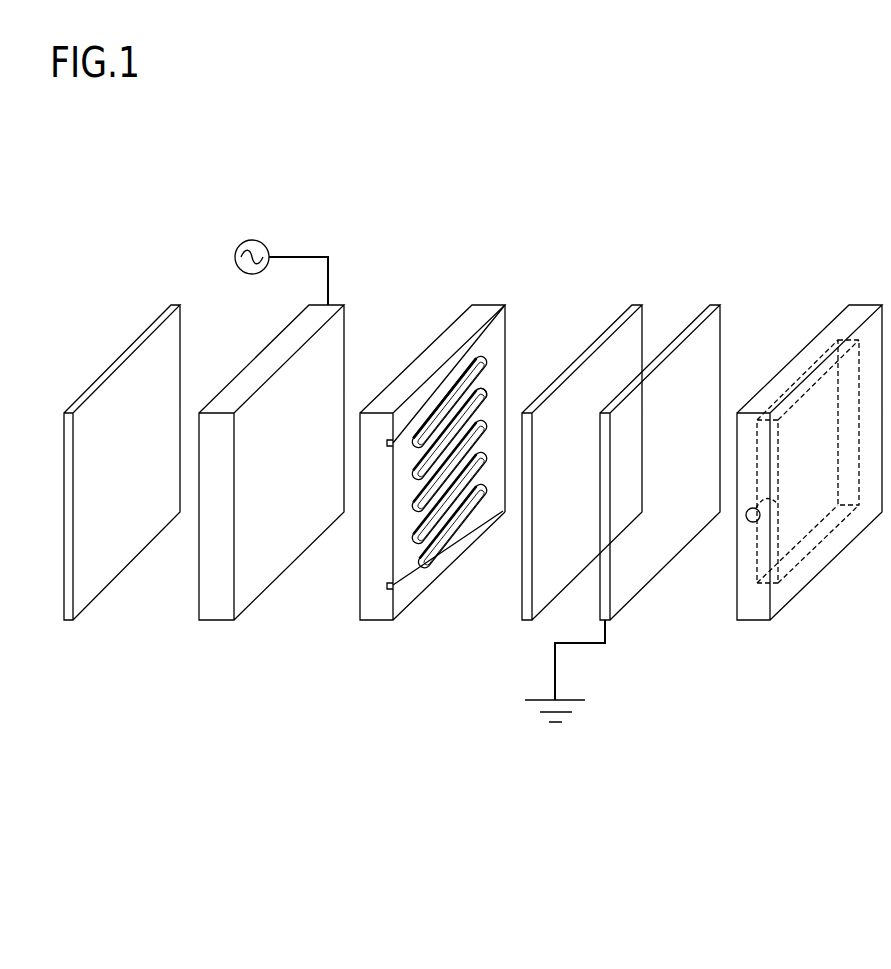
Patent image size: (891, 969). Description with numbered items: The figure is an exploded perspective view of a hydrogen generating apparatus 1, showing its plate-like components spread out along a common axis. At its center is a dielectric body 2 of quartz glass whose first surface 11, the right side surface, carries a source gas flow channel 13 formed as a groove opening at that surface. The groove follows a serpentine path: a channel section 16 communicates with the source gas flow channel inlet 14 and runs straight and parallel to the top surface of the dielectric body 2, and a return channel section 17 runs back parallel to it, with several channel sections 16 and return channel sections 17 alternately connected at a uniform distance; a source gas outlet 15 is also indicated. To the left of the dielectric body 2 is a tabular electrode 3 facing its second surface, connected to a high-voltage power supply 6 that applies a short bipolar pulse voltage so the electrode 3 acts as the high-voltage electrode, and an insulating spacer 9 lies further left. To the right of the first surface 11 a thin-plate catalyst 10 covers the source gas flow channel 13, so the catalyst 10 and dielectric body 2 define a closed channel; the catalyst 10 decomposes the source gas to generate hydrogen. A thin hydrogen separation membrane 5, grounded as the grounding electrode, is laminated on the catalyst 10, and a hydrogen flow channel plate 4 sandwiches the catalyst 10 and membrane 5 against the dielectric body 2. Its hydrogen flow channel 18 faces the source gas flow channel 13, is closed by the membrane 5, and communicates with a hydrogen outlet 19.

The hydrogen generating apparatus 1 is at (600, 185).
The dielectric body 2 is at (430, 353).
The electrode 3 is at (273, 353).
The hydrogen flow channel plate 4 is at (833, 323).
The hydrogen separation membrane 5 is at (694, 322).
The high-voltage power supply 6 is at (245, 242).
The insulating spacer 9 is at (125, 343).
The catalyst 10 is at (615, 322).
The first surface 11 is at (505, 333).
The source gas flow channel 13 is at (448, 530).
The source gas flow channel inlet 14 is at (388, 443).
The source gas outlet 15 is at (390, 586).
The channel section 16 is at (442, 390).
The return channel section 17 is at (466, 394).
The hydrogen flow channel 18 is at (823, 530).
The hydrogen outlet 19 is at (752, 522).